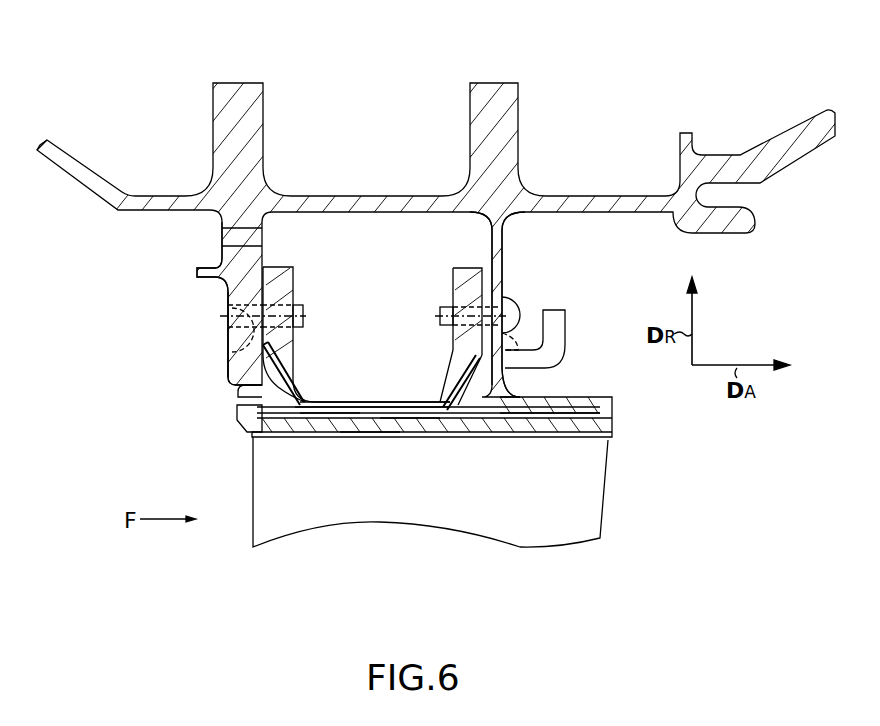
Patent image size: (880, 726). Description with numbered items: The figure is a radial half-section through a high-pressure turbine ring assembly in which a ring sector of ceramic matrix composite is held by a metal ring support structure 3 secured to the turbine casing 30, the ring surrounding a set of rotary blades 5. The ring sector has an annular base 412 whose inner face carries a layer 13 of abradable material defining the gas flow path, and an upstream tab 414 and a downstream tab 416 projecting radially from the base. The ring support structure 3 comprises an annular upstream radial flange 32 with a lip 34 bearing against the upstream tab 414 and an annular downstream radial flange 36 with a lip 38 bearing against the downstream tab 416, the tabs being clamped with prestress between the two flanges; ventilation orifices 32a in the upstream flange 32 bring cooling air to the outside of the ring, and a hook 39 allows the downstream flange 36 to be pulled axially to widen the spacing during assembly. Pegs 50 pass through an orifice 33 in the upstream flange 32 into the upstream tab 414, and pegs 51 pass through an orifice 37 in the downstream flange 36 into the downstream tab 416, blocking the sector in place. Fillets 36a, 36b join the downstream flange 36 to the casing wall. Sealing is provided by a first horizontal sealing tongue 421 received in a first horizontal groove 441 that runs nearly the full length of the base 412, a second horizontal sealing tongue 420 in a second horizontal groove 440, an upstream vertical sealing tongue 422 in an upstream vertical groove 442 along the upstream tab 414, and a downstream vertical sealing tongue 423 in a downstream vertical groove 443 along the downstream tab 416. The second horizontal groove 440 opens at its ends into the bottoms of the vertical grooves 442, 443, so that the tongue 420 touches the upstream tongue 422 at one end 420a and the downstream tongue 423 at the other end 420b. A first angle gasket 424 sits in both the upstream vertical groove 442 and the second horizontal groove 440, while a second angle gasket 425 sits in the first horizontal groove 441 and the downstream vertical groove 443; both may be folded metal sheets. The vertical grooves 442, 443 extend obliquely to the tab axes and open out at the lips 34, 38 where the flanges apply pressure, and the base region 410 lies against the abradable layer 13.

The ring support structure 3 is at (356, 103).
The rotary blades 5 is at (428, 520).
The layer of abradable material 13 is at (614, 434).
The turbine casing 30 is at (264, 119).
The annular upstream radial flange 32 is at (197, 272).
The ventilation orifices 32a is at (228, 239).
The orifice 33 is at (230, 351).
The lip 34 is at (240, 386).
The annular downstream radial flange 36 is at (503, 272).
The downstream fillet 36a is at (520, 207).
The upstream fillet 36b is at (471, 207).
The orifice 37 is at (505, 298).
The lip 38 is at (506, 348).
The hook 39 is at (566, 346).
The pegs 50 is at (304, 308).
The pegs 51 is at (442, 310).
The first sheet base 410 is at (344, 401).
The annular base 412 is at (370, 440).
The upstream tab 414 is at (270, 267).
The downstream tab 416 is at (453, 268).
The second horizontal sealing tongue 420 is at (386, 406).
The end of second horizontal sealing tongue 420a is at (275, 362).
The other end of second horizontal sealing tongue 420b is at (470, 425).
The first horizontal sealing tongue 421 is at (318, 440).
The upstream vertical sealing tongue 422 is at (268, 440).
The downstream vertical sealing tongue 423 is at (530, 440).
The first angle gasket 424 is at (290, 384).
The second angle gasket 425 is at (460, 376).
The second horizontal groove 440 is at (428, 412).
The first horizontal groove 441 is at (420, 438).
The upstream vertical groove 442 is at (240, 414).
The downstream vertical groove 443 is at (496, 383).